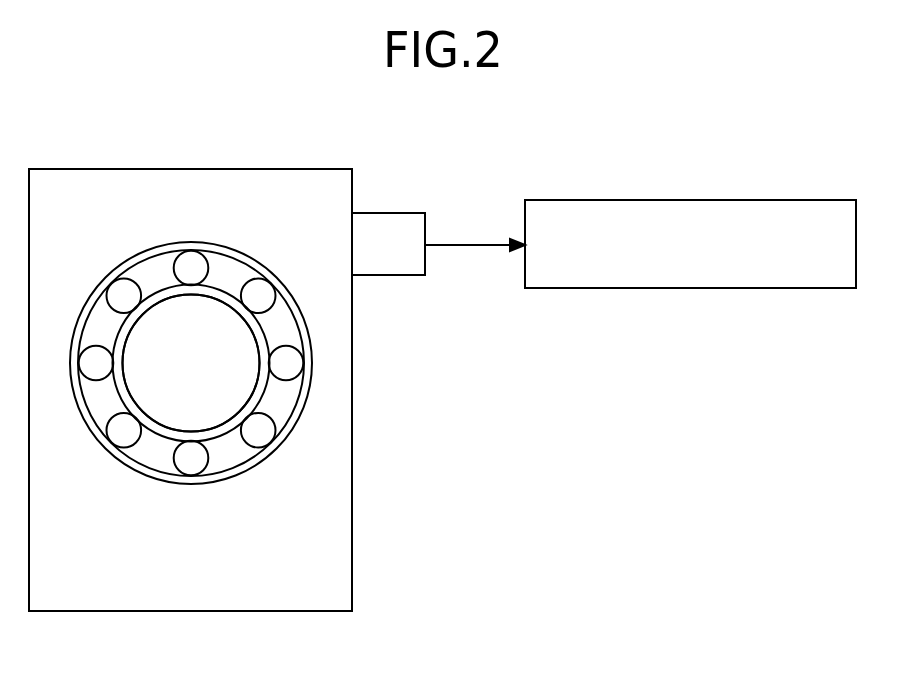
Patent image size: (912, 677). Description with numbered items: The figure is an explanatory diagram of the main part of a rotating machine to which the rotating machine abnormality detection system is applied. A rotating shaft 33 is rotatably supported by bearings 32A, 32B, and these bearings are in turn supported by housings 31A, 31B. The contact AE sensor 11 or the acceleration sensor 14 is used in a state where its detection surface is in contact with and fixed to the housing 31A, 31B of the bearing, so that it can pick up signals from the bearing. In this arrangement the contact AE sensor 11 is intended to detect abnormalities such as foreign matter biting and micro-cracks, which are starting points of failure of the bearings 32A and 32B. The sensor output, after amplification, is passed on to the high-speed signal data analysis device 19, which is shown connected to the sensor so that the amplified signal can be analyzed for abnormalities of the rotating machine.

The housing 31A is at (190, 362).
The housing 31B is at (270, 168).
The bearing 32A is at (296, 363).
The bearing 32B is at (300, 319).
The rotating shaft 33 is at (218, 385).
The contact AE sensor 11 is at (407, 209).
The acceleration sensor 14 is at (400, 212).
The high-speed signal data analysis device 19 is at (778, 200).